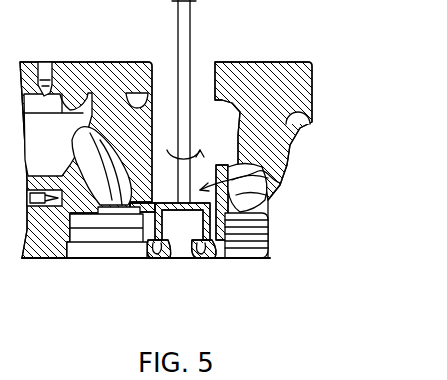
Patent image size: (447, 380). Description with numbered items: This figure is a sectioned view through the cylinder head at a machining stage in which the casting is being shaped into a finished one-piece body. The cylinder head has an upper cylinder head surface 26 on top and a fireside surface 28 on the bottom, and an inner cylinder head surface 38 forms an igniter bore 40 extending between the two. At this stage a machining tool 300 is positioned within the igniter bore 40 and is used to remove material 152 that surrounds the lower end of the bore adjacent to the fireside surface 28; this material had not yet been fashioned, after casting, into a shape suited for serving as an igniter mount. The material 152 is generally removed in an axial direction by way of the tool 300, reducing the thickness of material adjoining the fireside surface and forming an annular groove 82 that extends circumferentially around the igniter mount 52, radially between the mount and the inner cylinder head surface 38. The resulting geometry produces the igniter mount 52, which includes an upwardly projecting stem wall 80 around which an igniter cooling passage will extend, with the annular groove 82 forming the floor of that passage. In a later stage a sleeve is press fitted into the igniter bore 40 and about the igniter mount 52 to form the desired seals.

The upper cylinder head surface 26 is at (58, 62).
The fireside surface 28 is at (42, 260).
The inner cylinder head surface 38 is at (216, 102).
The igniter bore 40 is at (168, 135).
The igniter mount 52 is at (191, 260).
The upwardly projecting stem wall 80 is at (229, 255).
The annular groove 82 is at (132, 247).
The material 152 is at (156, 260).
The machining tool 300 is at (256, 181).